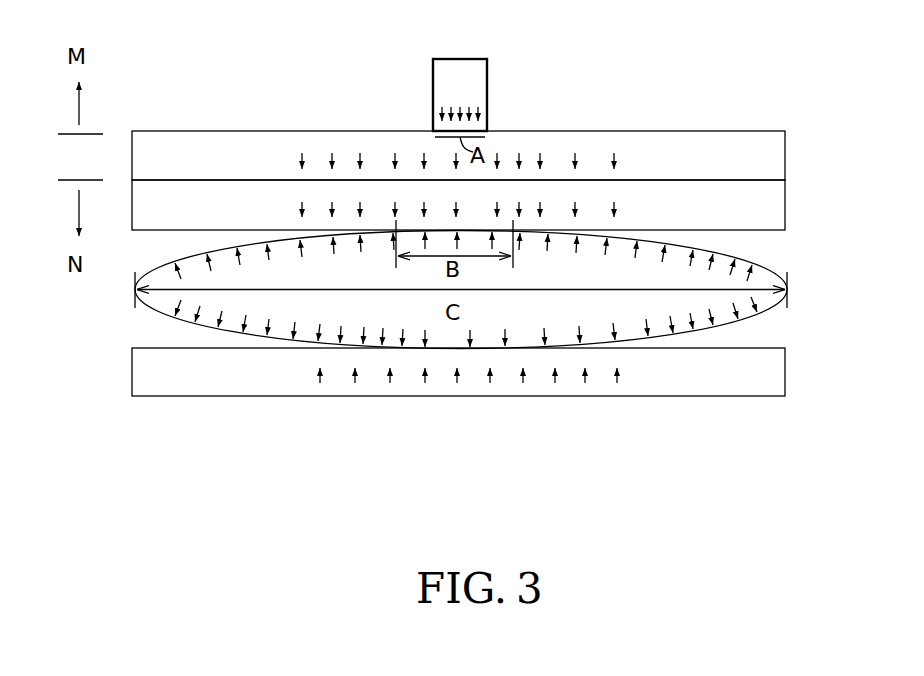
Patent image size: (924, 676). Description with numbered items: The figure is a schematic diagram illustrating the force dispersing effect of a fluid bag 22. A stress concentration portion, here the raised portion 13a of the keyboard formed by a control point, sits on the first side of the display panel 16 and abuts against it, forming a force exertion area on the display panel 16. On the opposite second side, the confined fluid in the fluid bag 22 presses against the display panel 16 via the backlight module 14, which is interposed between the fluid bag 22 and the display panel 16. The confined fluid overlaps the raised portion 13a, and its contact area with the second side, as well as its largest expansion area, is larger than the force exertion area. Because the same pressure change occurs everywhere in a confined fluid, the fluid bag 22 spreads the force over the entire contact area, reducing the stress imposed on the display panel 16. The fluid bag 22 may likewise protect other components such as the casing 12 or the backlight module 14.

The raised portion 13a is at (487, 88).
The display panel 16 is at (775, 158).
The backlight module 14 is at (775, 213).
The fluid bag 22 is at (603, 277).
The casing 12 is at (775, 380).